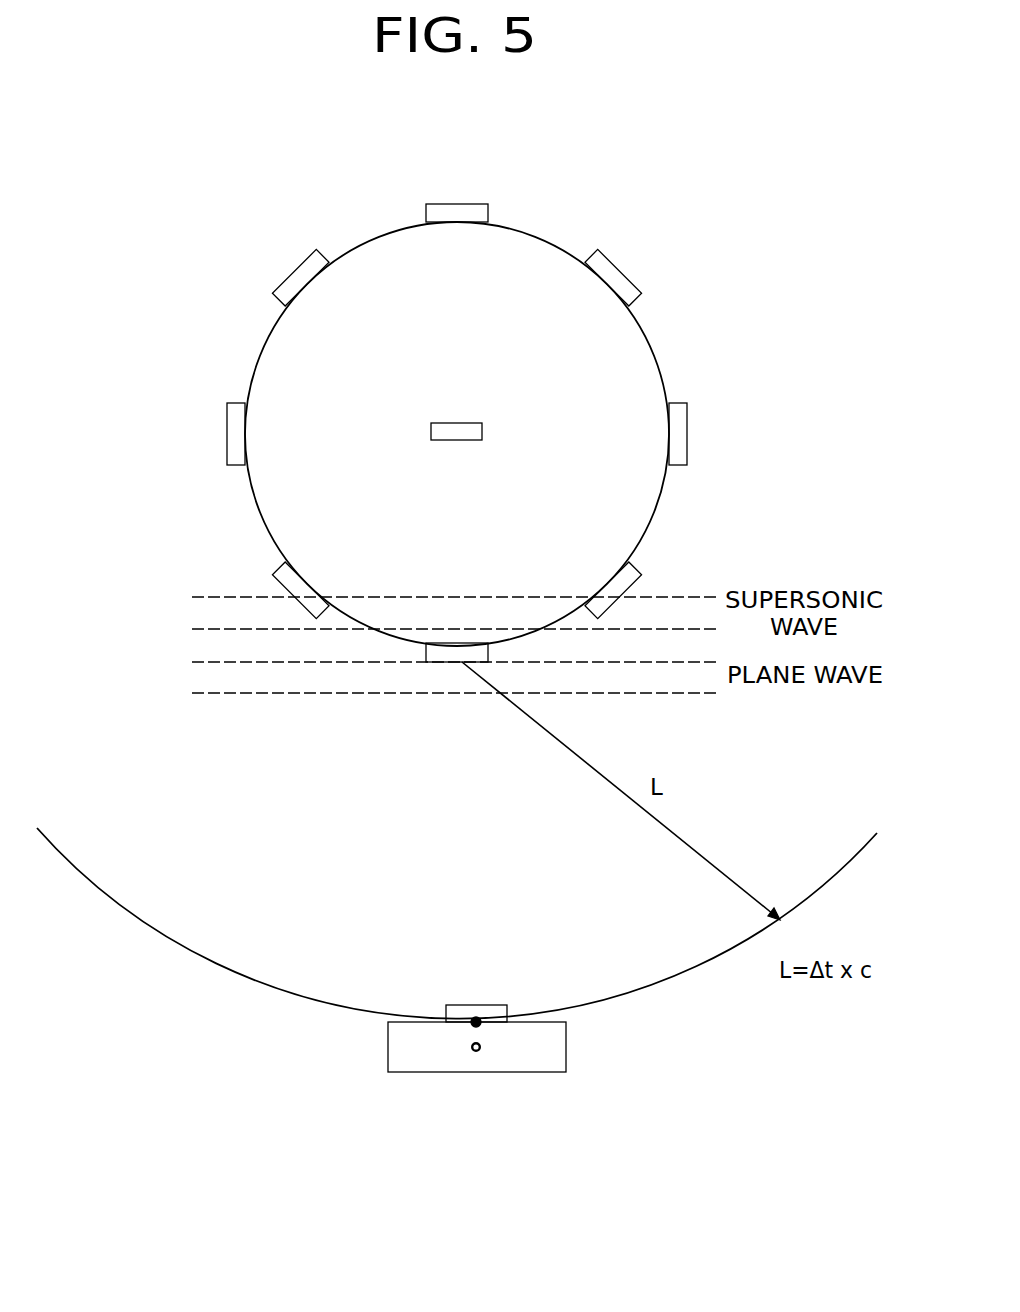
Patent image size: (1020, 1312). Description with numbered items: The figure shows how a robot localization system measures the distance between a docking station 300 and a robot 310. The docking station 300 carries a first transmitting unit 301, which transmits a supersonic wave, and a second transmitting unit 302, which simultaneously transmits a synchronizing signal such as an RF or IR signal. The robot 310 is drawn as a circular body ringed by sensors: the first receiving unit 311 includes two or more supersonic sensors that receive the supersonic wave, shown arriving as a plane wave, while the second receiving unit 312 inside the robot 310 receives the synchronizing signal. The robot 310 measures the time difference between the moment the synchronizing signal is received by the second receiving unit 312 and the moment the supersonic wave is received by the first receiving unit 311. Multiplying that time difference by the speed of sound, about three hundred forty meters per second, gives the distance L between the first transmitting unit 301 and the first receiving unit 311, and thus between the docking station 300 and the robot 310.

The robot 310 is at (497, 339).
The first receiving unit 311 is at (293, 268).
The second receiving unit 312 is at (450, 440).
The docking station 300 is at (566, 1048).
The first transmitting unit 301 is at (476, 1017).
The second transmitting unit 302 is at (479, 1043).